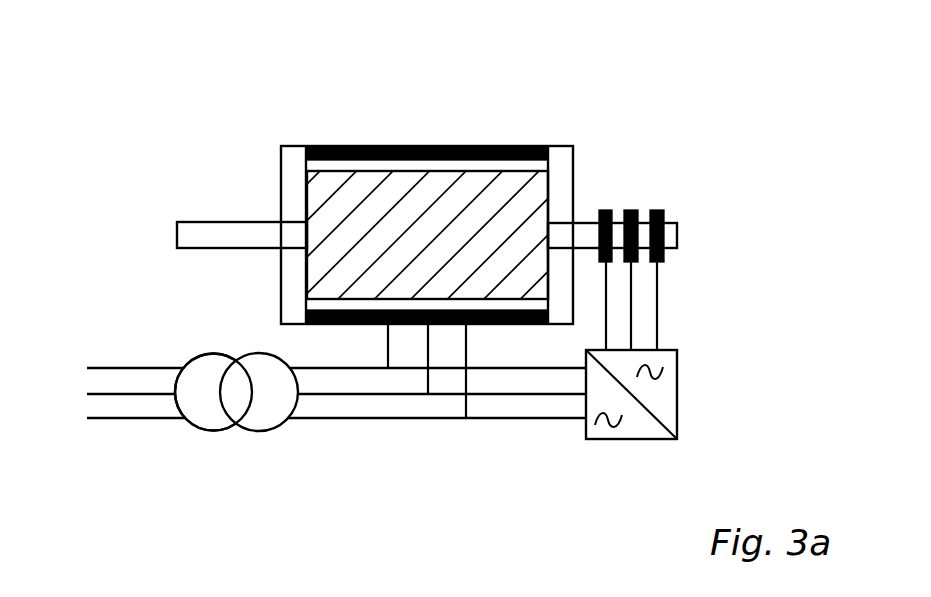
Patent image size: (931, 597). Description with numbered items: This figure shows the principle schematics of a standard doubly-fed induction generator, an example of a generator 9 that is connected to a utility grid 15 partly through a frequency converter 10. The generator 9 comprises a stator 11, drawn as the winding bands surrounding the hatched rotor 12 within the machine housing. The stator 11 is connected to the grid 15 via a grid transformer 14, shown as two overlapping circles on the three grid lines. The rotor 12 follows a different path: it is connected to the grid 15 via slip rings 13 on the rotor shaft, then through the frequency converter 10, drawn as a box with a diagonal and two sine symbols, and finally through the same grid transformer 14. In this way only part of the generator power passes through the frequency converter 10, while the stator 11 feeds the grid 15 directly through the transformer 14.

The generator 9 is at (293, 167).
The frequency converter 10 is at (665, 400).
The stator 11 is at (418, 148).
The rotor 12 is at (375, 208).
The slip rings 13 is at (607, 210).
The grid transformer 14 is at (253, 432).
The utility grid 15 is at (152, 393).